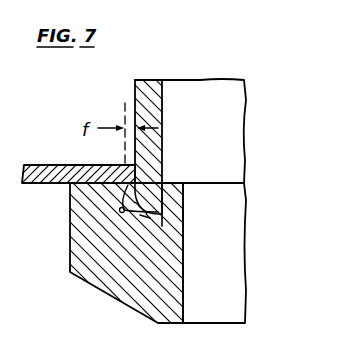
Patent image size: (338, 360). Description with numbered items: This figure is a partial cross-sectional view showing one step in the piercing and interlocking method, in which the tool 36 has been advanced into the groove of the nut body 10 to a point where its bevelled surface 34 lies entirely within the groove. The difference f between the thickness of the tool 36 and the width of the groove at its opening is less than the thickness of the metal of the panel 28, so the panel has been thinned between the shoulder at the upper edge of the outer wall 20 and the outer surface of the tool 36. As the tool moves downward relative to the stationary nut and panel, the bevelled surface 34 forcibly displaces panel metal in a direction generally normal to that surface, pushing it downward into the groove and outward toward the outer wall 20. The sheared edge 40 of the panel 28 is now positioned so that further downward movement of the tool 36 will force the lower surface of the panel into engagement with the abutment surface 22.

The nut body 10 is at (141, 291).
The outer wall 20 is at (119, 210).
The abutment surface 22 is at (133, 217).
The panel 28 is at (42, 167).
The bevelled surface 34 is at (163, 160).
The tool 36 is at (163, 106).
The sheared edge 40 is at (162, 208).